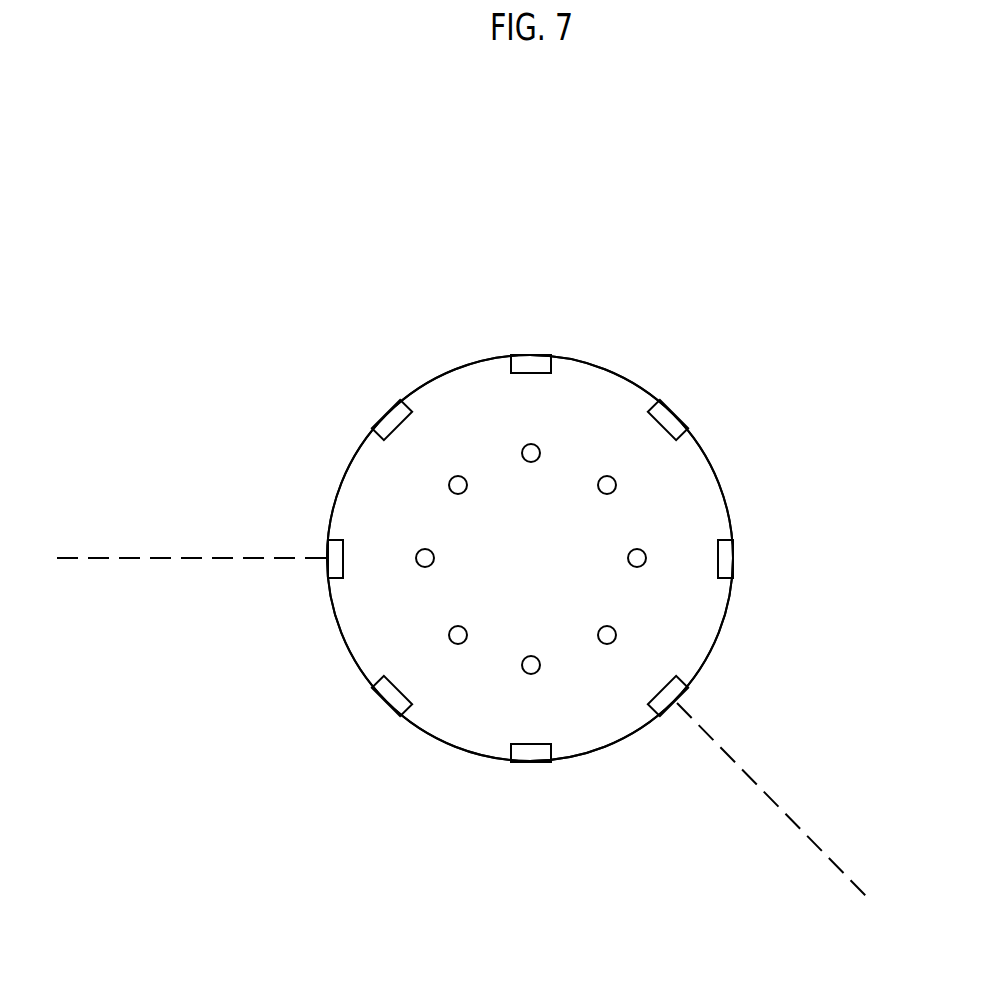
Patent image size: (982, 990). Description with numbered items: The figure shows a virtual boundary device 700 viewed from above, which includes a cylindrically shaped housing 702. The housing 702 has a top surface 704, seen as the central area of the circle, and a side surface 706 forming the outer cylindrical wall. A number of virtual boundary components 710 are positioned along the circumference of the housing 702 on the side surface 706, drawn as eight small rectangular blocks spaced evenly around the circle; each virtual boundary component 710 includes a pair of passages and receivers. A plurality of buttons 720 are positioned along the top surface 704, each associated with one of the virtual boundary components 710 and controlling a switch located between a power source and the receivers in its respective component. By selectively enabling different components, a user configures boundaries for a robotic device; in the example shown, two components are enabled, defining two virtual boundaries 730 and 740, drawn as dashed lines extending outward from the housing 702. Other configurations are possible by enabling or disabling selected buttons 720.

The virtual boundary device 700 is at (409, 296).
The housing 702 is at (640, 387).
The top surface 704 is at (589, 608).
The side surface 706 is at (720, 482).
The virtual boundary components 710 is at (540, 354).
The buttons 720 is at (528, 462).
The virtual boundary 730 is at (158, 557).
The virtual boundary 740 is at (817, 843).